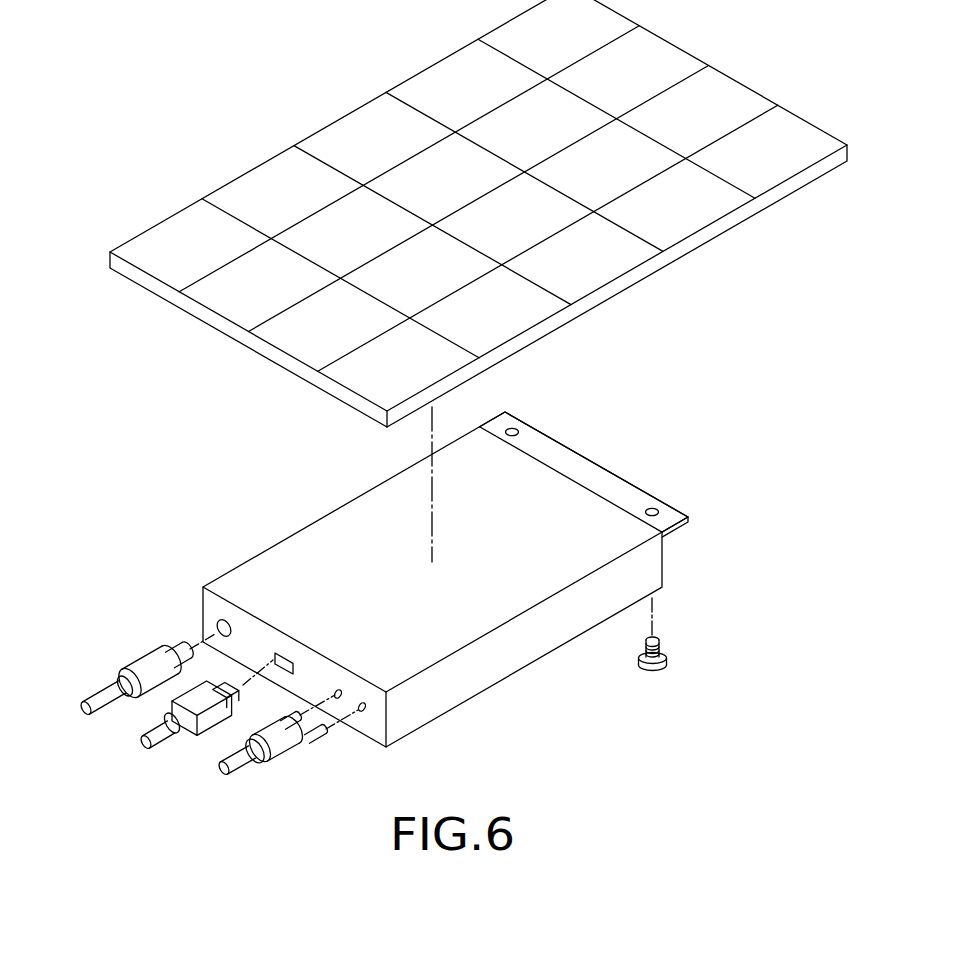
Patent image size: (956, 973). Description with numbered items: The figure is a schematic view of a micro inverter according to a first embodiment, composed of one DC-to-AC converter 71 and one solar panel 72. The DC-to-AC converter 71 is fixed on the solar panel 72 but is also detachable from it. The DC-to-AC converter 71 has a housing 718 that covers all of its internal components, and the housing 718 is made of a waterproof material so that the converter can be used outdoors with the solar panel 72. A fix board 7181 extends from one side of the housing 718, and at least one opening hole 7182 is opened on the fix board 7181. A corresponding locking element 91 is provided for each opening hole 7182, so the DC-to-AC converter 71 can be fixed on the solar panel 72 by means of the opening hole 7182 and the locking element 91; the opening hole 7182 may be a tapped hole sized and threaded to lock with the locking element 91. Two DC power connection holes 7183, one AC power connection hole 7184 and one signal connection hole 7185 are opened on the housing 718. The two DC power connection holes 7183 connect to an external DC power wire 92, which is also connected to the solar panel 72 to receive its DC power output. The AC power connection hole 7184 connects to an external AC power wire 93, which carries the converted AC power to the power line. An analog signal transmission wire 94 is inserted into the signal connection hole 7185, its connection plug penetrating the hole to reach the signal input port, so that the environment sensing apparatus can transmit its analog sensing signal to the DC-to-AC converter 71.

The solar panel 72 is at (363, 130).
The DC-to-AC converter 71 is at (438, 608).
The housing 718 is at (503, 652).
The fix board 7181 is at (575, 465).
The opening hole 7182 is at (656, 509).
The DC power connection holes 7183 is at (361, 711).
The AC power connection hole 7184 is at (217, 624).
The signal connection hole 7185 is at (273, 657).
The locking element 91 is at (667, 663).
The external DC power wire 92 is at (256, 724).
The external AC power wire 93 is at (138, 662).
The analog signal transmission wire 94 is at (186, 698).